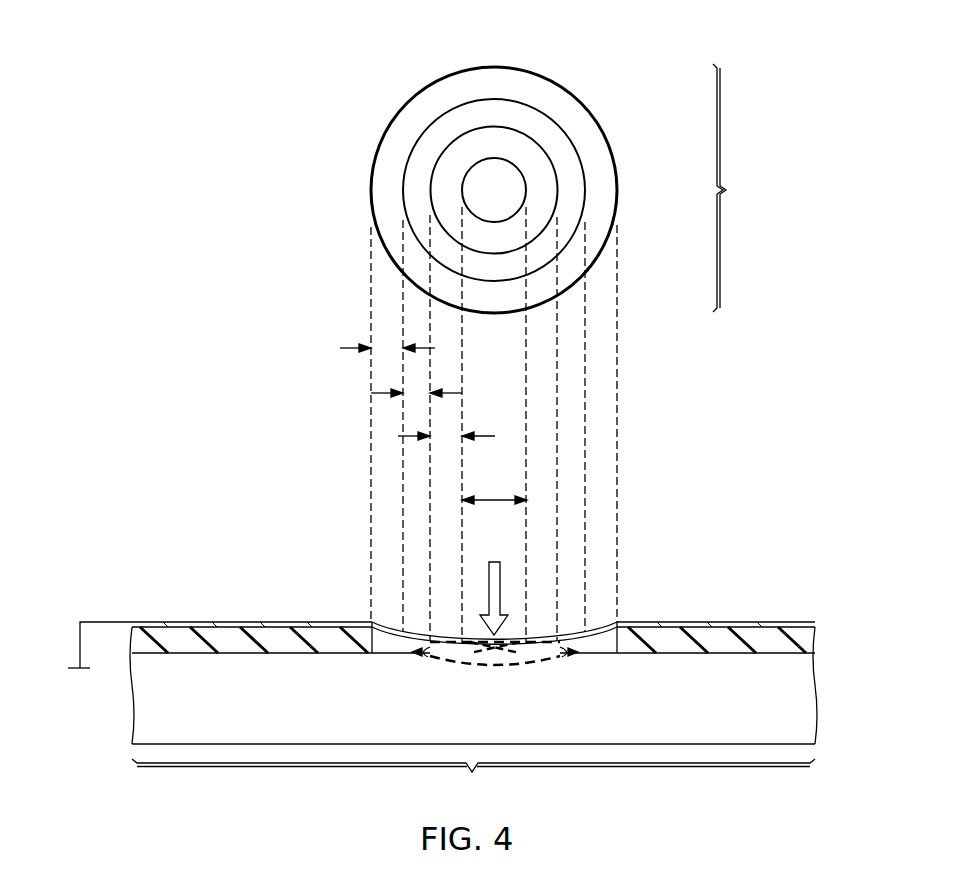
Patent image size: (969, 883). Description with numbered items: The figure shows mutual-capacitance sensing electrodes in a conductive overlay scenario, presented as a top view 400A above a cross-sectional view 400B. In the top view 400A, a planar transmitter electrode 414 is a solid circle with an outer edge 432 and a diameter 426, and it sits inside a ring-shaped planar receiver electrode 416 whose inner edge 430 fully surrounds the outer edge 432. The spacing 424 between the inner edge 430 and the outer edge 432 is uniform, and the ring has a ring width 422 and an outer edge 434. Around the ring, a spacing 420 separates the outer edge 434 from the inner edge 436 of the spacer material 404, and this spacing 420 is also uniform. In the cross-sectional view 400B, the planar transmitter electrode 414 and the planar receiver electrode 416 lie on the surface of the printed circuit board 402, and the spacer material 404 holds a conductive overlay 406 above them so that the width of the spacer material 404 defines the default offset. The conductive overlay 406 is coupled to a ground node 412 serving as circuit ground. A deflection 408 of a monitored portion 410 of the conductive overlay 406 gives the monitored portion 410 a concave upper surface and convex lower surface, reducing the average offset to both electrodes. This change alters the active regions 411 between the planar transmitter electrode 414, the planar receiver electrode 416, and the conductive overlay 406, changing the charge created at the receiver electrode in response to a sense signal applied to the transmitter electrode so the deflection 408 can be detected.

The top view 400A is at (768, 188).
The cross-sectional view 400B is at (473, 782).
The printed circuit board 402 is at (817, 700).
The spacer material 404 is at (817, 640).
The conductive overlay 406 is at (817, 622).
The deflection 408 is at (487, 590).
The monitored portion 410 is at (380, 652).
The active regions 411 is at (437, 662).
The ground node 412 is at (67, 676).
The planar transmitter electrode 414 is at (478, 180).
The planar receiver electrode 416 is at (415, 181).
The spacing 420 is at (352, 348).
The ring width 422 is at (382, 393).
The spacing 424 is at (480, 436).
The diameter 426 is at (492, 500).
The inner edge 430 is at (508, 130).
The outer edge 432 is at (527, 180).
The outer edge 434 is at (494, 100).
The inner edge 436 is at (607, 175).